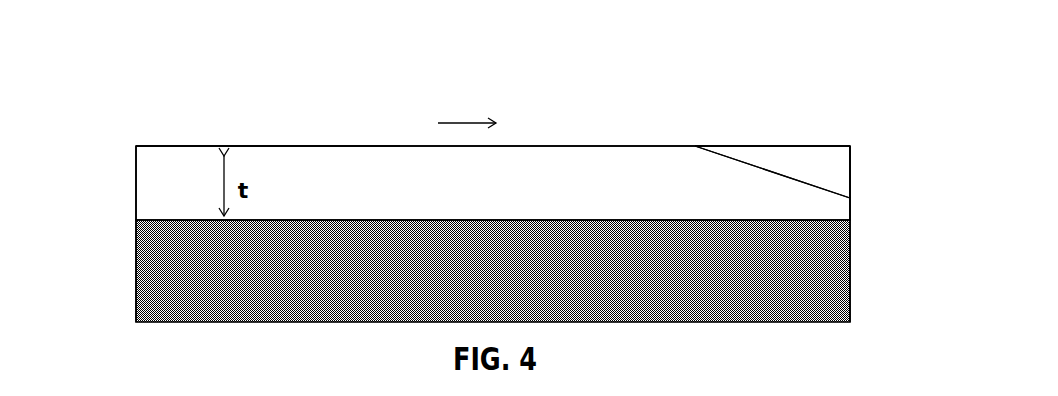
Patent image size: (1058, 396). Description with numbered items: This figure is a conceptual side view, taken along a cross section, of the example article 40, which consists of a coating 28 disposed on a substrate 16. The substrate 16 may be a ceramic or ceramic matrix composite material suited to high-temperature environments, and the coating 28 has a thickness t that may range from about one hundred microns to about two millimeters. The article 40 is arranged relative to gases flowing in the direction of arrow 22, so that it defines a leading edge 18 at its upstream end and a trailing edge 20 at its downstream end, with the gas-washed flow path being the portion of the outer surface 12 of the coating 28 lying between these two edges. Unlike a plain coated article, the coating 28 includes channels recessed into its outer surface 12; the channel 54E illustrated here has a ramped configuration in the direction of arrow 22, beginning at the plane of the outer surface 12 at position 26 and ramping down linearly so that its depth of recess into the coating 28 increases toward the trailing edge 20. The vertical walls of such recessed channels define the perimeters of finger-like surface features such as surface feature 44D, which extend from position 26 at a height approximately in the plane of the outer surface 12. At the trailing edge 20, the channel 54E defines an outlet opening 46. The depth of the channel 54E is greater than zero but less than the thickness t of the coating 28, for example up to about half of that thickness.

The outer surface 12 is at (263, 146).
The substrate 16 is at (486, 284).
The leading edge 18 is at (119, 146).
The trailing edge 20 is at (878, 95).
The arrow 22 is at (467, 108).
The position 26 is at (697, 148).
The coating 28 is at (486, 209).
The article 40 is at (256, 79).
The surface feature 44D is at (773, 146).
The outlet opening 46 is at (859, 179).
The channel 54E is at (828, 173).